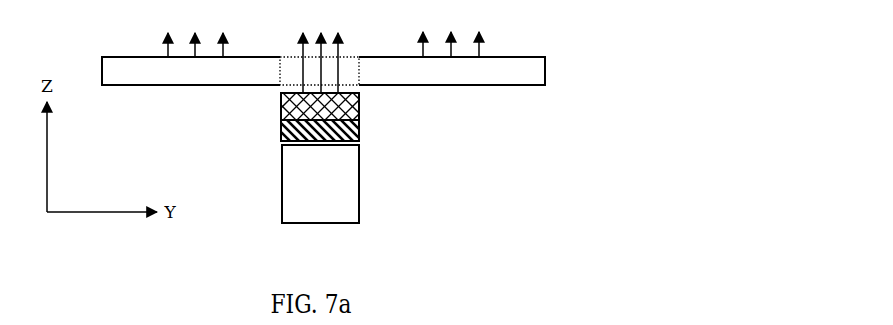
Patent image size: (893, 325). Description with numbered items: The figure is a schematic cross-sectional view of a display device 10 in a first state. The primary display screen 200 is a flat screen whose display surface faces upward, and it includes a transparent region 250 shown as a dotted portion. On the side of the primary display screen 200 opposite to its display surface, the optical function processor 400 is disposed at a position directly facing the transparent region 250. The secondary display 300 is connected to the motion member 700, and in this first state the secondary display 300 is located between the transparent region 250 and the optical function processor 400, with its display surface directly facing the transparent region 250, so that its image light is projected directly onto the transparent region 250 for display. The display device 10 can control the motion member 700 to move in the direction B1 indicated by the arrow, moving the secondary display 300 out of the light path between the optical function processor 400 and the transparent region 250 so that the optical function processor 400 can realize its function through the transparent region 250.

The primary display screen 200 is at (507, 57).
The transparent region 250 is at (351, 63).
The secondary display 300 is at (349, 104).
The motion member 700 is at (349, 128).
The optical function processor 400 is at (347, 182).
The display device 10 is at (333, 262).
The direction B1 is at (281, 131).